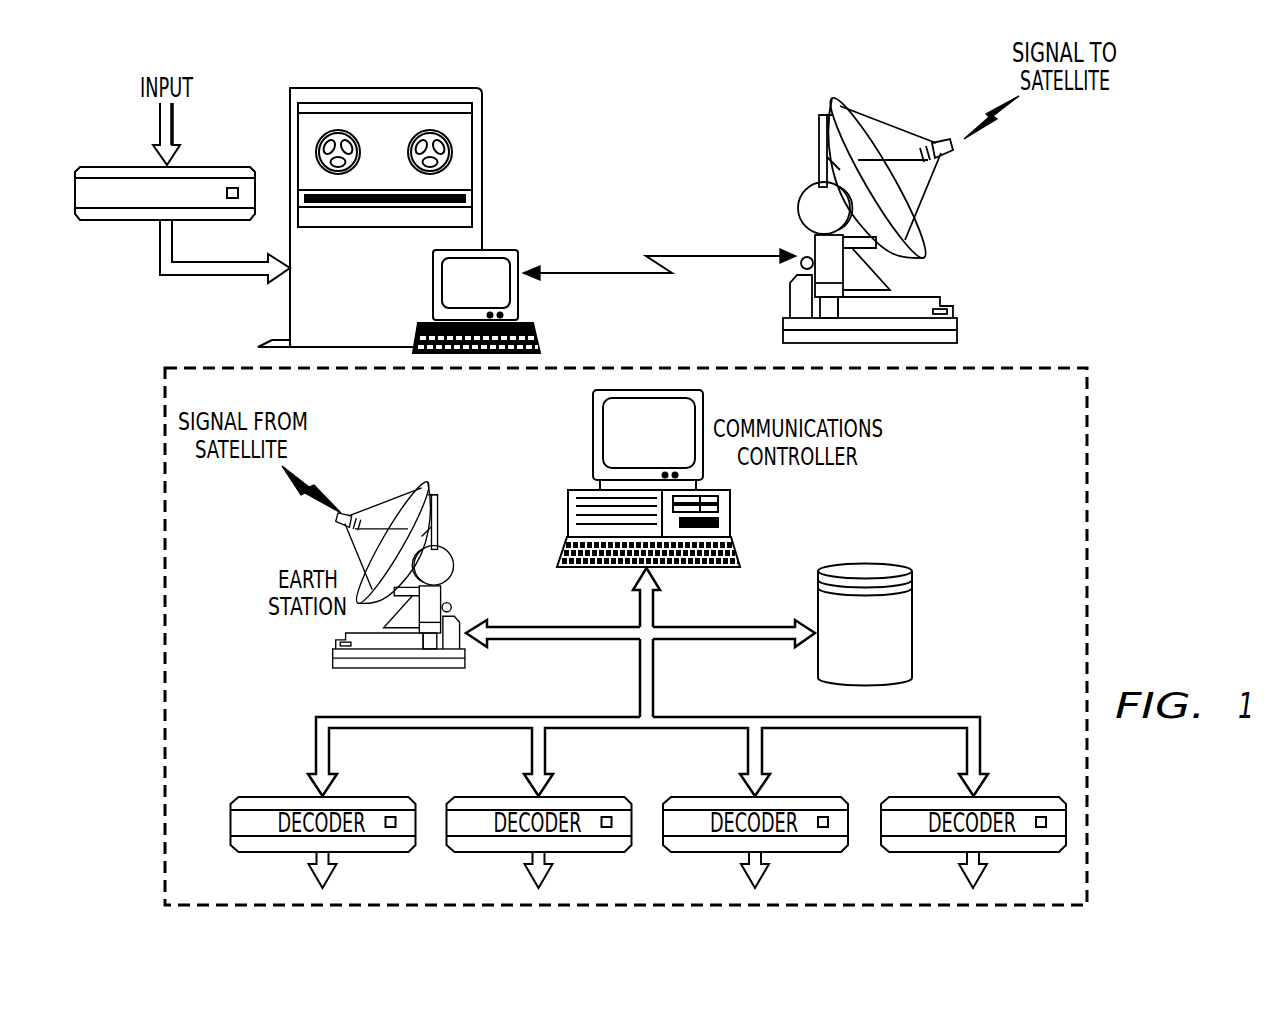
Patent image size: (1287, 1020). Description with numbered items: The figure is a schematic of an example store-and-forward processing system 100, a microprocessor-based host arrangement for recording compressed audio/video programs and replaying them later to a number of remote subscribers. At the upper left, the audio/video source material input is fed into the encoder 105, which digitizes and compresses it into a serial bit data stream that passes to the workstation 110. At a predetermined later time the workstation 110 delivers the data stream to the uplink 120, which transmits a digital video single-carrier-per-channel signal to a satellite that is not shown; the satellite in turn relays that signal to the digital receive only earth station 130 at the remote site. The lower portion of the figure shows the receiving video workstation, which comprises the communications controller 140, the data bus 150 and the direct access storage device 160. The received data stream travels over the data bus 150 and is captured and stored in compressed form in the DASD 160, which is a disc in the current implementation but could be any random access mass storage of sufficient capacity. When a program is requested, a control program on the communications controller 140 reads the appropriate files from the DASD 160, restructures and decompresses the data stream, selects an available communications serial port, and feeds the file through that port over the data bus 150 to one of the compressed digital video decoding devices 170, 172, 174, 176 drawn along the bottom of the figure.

The store-and-forward processing system 100 is at (678, 97).
The encoder 105 is at (112, 166).
The workstation 110 is at (380, 298).
The uplink 120 is at (923, 237).
The digital receive only earth station 130 is at (417, 503).
The communications controller 140 is at (593, 433).
The data bus 150 is at (653, 668).
The direct access storage device (DASD) 160 is at (863, 569).
The compressed digital video decoding device 170 is at (270, 797).
The compressed digital video decoding device 172 is at (484, 797).
The compressed digital video decoding device 174 is at (702, 797).
The compressed digital video decoding device 176 is at (921, 797).